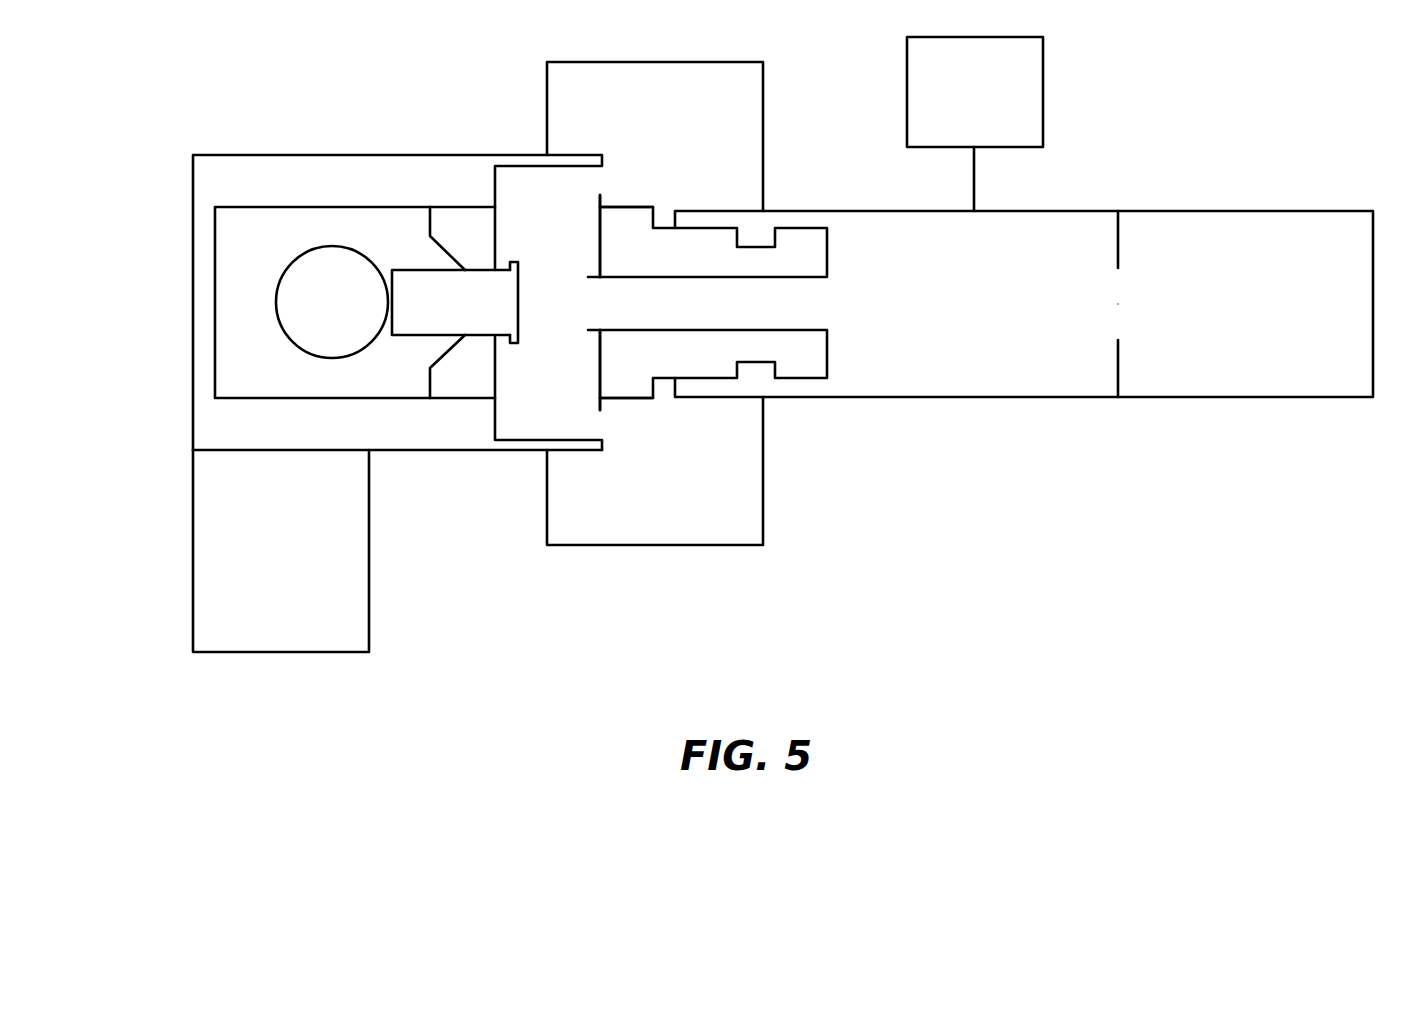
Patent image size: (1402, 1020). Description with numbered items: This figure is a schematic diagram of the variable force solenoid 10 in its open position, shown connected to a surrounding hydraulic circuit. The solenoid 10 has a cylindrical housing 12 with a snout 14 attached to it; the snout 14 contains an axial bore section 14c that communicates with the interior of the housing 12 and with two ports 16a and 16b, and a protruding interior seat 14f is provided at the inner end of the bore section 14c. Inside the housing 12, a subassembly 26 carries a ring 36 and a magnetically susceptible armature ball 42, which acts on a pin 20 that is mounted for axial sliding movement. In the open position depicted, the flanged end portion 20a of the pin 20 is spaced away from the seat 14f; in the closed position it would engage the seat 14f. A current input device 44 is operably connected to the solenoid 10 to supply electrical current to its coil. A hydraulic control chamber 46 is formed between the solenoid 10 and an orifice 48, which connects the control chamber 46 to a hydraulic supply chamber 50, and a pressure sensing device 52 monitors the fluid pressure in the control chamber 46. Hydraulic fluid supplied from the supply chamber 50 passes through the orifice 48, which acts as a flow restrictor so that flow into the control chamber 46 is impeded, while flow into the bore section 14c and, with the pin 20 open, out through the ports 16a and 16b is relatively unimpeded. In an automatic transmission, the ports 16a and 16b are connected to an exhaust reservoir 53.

The variable force solenoid 10 is at (397, 272).
The cylindrical housing 12 is at (397, 476).
The snout 14 is at (613, 266).
The axial bore section 14c is at (747, 343).
The interior seat 14f is at (556, 316).
The port 16a is at (662, 430).
The port 16b is at (664, 172).
The pin 20 is at (435, 319).
The flanged end portion 20a is at (541, 325).
The subassembly 26 is at (259, 302).
The ring 36 is at (459, 256).
The armature ball 42 is at (314, 319).
The current input device 44 is at (261, 566).
The hydraulic control chamber 46 is at (954, 326).
The orifice 48 is at (1118, 245).
The hydraulic supply chamber 50 is at (1232, 326).
The pressure sensing device 52 is at (955, 108).
The exhaust reservoir 53 is at (589, 119).